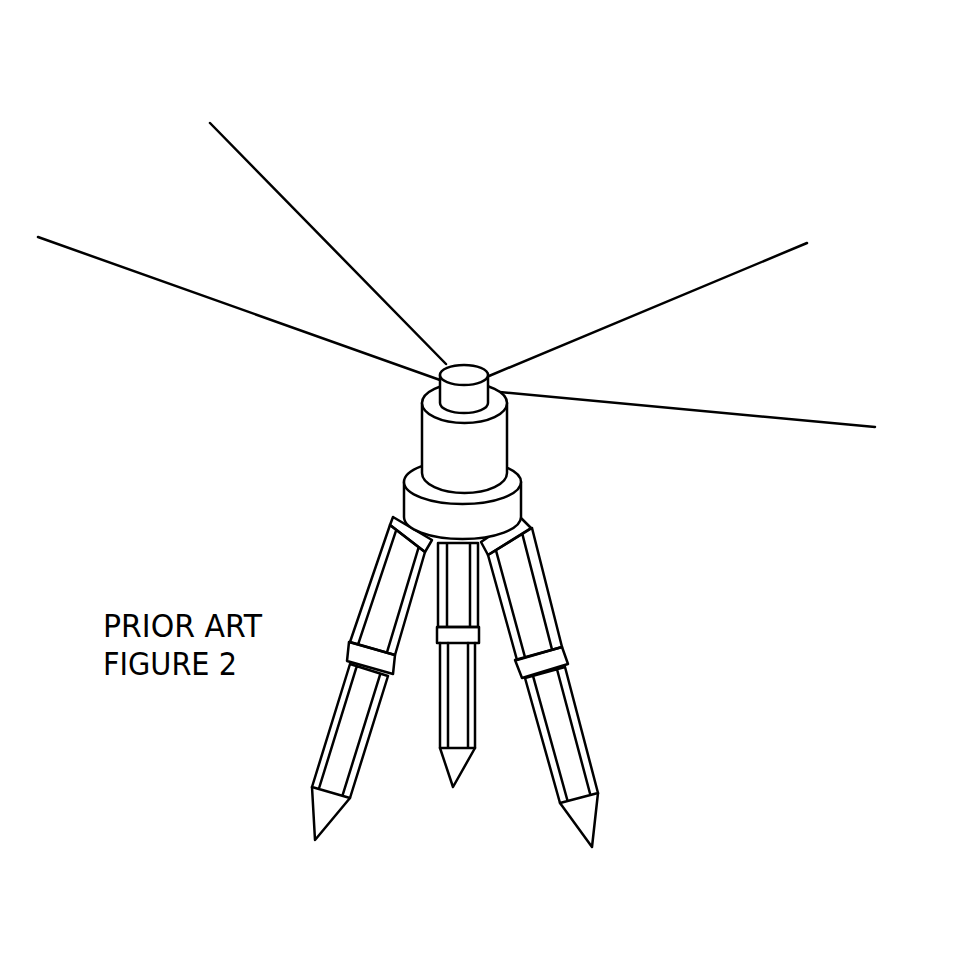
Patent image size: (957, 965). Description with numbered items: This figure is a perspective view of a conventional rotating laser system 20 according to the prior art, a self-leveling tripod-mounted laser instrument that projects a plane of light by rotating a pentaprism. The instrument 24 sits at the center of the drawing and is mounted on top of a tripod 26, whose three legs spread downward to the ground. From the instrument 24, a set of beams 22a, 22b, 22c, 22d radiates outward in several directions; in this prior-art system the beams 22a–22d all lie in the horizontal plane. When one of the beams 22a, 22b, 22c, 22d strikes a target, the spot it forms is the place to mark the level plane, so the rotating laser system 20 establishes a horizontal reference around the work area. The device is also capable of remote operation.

The conventional rotating laser system 20 is at (562, 120).
The beam 22a is at (107, 262).
The beam 22b is at (280, 190).
The beam 22c is at (693, 292).
The beam 22d is at (750, 416).
The instrument 24 is at (508, 462).
The tripod 26 is at (549, 590).